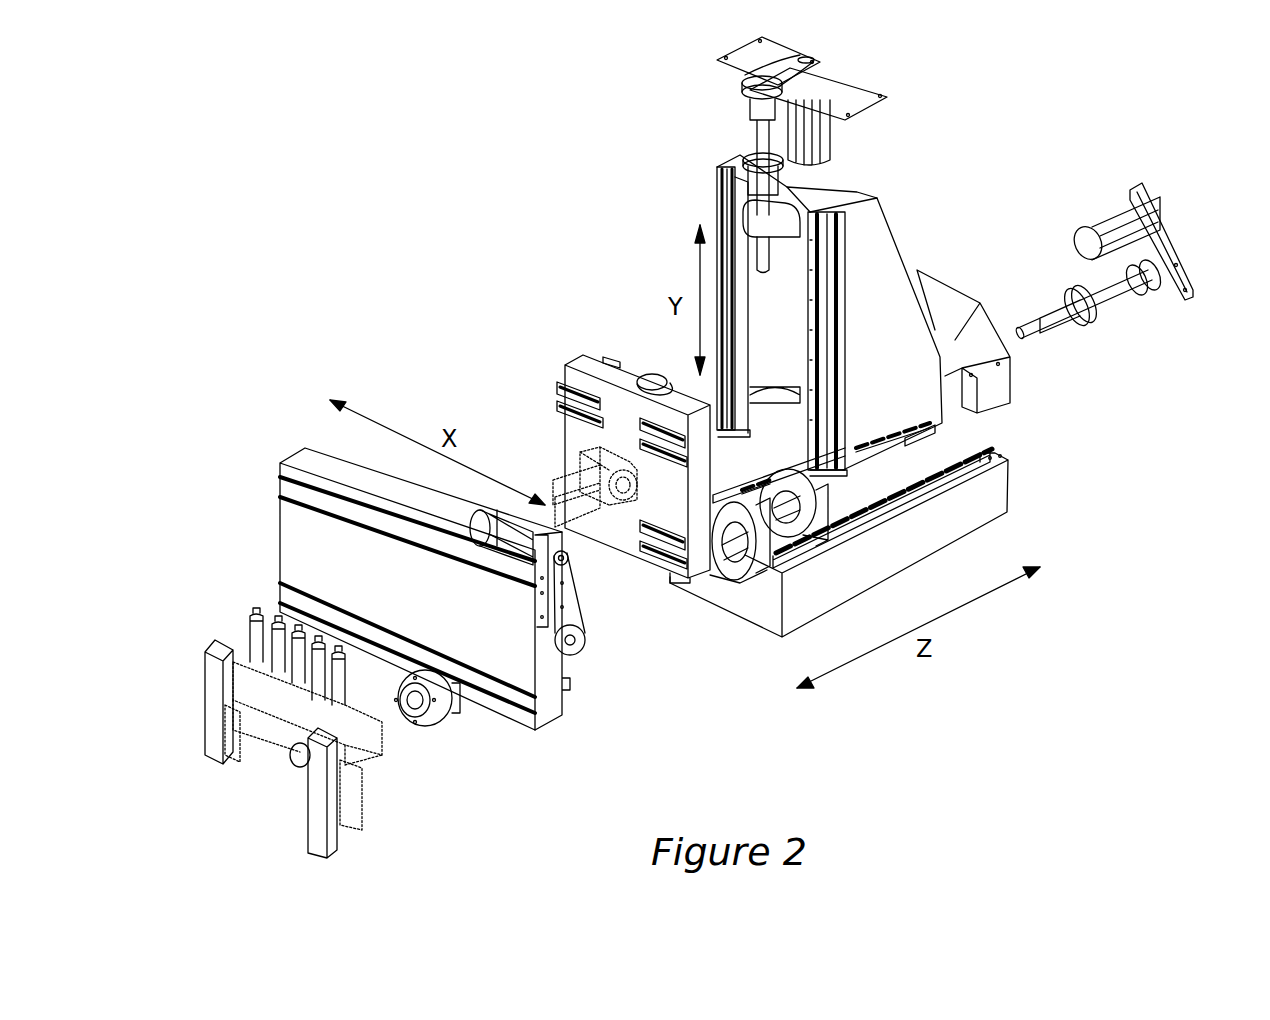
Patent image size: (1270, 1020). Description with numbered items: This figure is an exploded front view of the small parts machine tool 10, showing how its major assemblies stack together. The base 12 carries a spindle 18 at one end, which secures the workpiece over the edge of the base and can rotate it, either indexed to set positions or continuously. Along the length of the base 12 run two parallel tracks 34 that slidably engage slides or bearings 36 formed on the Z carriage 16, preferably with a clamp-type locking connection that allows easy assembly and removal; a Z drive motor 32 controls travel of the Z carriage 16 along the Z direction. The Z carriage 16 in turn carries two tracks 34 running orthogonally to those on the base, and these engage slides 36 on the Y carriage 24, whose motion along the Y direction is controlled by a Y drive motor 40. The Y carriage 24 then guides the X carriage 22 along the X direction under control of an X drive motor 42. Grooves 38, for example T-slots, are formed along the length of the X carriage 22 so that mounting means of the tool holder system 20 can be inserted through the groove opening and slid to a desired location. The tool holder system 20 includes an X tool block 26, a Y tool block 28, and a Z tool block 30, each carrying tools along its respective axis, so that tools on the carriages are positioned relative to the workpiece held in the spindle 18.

The small parts machine tool 10 is at (399, 166).
The base 12 is at (932, 548).
The Z carriage 16 is at (887, 231).
The spindle 18 is at (437, 722).
The tool holder system 20 is at (191, 679).
The X carriage 22 is at (293, 530).
The Y carriage 24 is at (573, 440).
The X tool block 26 is at (212, 758).
The Y tool block 28 is at (243, 658).
The Z tool block 30 is at (333, 843).
The Z drive motor 32 is at (1196, 292).
The tracks 34 is at (722, 205).
The slides or bearings 36 is at (618, 356).
The grooves 38 is at (538, 722).
The Y drive motor 40 is at (748, 82).
The X drive motor 42 is at (572, 656).